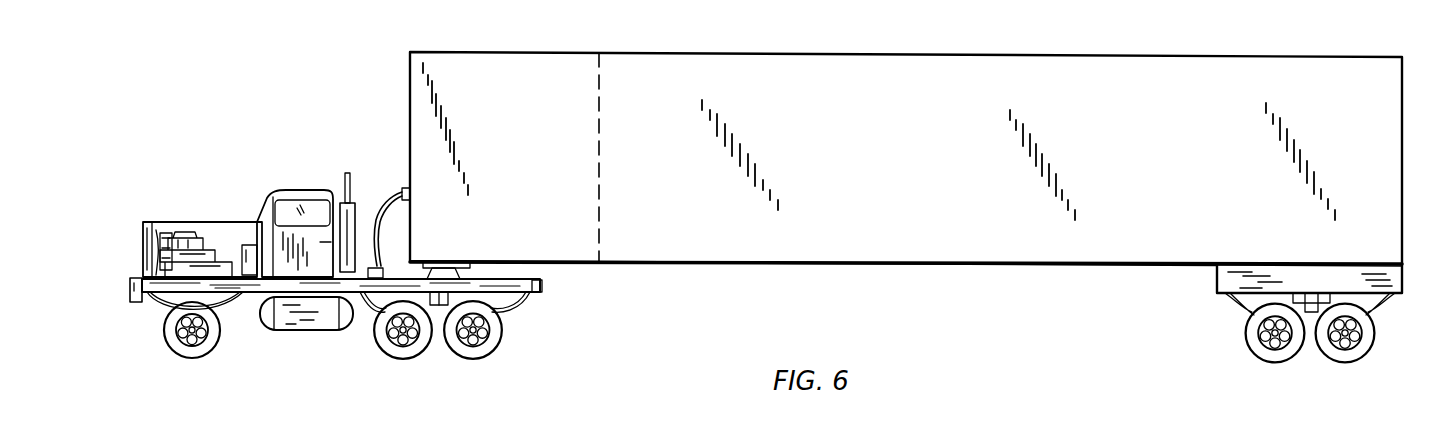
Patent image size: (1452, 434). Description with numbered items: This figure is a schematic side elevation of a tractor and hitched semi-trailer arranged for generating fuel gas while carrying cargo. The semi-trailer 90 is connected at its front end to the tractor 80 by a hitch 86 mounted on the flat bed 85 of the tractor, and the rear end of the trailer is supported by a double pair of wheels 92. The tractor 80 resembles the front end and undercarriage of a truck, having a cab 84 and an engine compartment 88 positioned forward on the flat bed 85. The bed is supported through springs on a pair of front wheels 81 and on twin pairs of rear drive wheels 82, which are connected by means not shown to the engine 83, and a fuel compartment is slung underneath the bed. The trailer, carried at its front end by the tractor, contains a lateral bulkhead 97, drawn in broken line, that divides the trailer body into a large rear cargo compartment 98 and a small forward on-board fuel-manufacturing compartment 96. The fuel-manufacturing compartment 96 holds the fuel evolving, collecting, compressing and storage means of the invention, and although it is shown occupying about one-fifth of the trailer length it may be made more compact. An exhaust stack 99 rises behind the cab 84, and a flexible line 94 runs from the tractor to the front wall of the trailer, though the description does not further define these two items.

The tractor 80 is at (250, 196).
The pair of front wheels 81 is at (192, 354).
The twin pairs of rear drive wheels 82 is at (452, 352).
The engine 83 is at (190, 227).
The cab 84 is at (297, 189).
The flat bed 85 is at (541, 284).
The hitch 86 is at (432, 277).
The engine compartment 88 is at (212, 221).
The semi-trailer 90 is at (360, 217).
The double pair of wheels 92 is at (1332, 358).
The hose / conduit 94 is at (392, 194).
The on-board fuel-manufacturing compartment 96 is at (503, 80).
The lateral bulkhead 97 is at (600, 97).
The rear cargo compartment 98 is at (982, 85).
The exhaust stack 99 is at (349, 172).